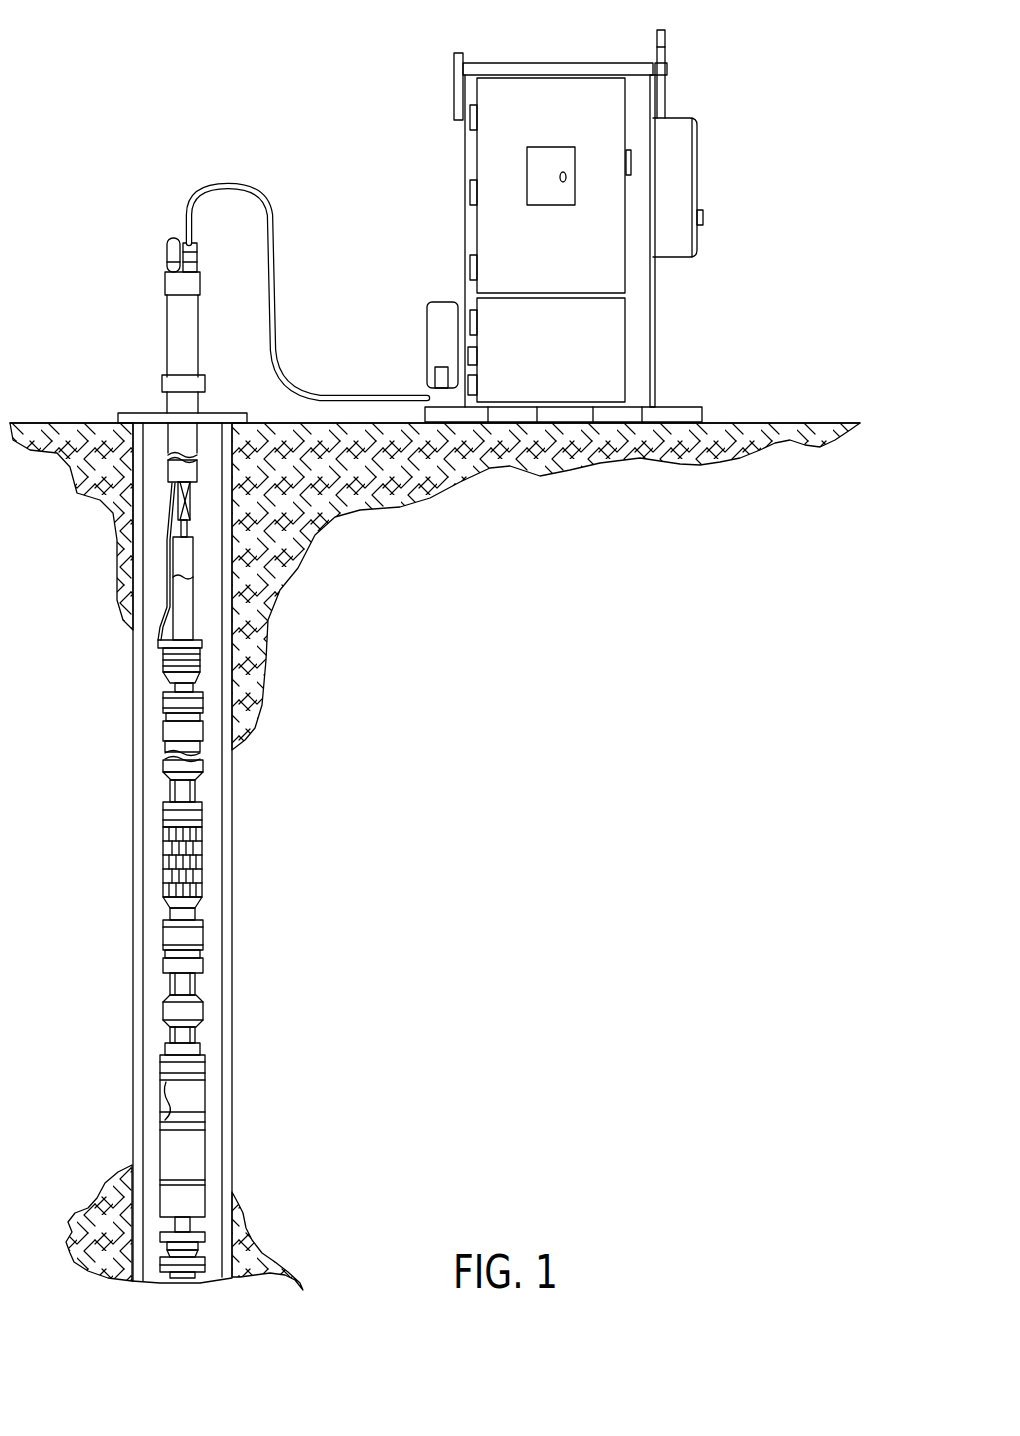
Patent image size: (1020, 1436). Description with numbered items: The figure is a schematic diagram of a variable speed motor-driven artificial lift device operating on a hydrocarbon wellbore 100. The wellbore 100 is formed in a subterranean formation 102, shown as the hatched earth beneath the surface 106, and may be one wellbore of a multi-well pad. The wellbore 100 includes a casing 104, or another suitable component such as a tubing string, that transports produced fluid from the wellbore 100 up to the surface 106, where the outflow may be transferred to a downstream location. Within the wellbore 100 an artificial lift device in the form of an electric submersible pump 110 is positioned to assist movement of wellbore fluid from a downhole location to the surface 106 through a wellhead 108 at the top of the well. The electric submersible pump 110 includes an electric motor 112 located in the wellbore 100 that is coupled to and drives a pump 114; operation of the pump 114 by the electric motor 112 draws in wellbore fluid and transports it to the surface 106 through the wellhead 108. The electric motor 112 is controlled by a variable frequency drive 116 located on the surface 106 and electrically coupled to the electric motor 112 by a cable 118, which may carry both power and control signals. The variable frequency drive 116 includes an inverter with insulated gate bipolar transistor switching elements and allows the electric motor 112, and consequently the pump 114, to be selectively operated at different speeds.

The hydrocarbon wellbore 100 is at (152, 817).
The subterranean formation 102 is at (600, 819).
The casing 104 is at (228, 1000).
The surface 106 is at (762, 421).
The wellhead 108 is at (179, 332).
The electric submersible pump 110 is at (177, 913).
The electric motor 112 is at (170, 1145).
The pump 114 is at (172, 768).
The variable frequency drive 116 is at (548, 85).
The cable 118 is at (160, 913).